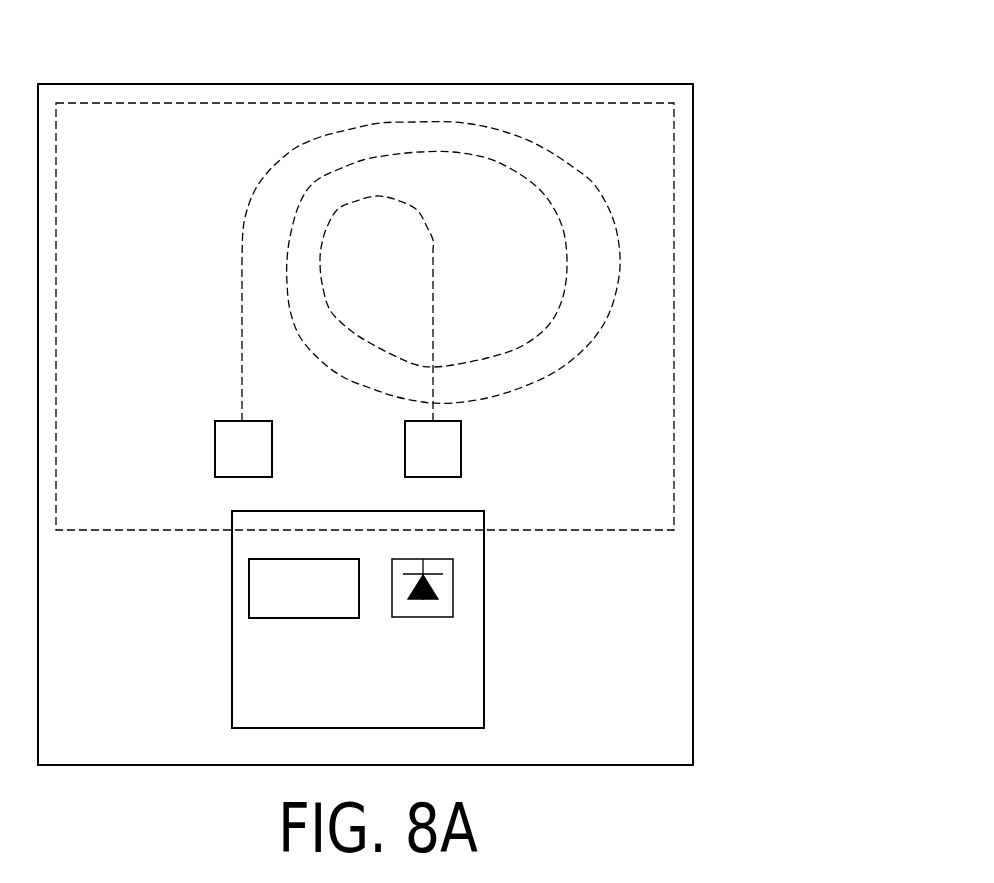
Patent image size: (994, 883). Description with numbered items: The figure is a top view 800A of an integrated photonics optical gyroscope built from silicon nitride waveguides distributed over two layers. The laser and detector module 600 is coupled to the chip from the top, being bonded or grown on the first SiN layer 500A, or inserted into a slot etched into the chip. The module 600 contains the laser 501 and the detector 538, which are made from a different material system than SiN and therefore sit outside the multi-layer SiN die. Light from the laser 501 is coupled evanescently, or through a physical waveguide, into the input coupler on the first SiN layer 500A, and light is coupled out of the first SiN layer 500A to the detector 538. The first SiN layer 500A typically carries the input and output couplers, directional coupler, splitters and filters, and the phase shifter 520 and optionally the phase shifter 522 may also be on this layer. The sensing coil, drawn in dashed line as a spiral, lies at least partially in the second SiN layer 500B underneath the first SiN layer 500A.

The top view 800A is at (724, 55).
The first SiN layer 500A is at (694, 157).
The second SiN layer 500B is at (674, 213).
The phase shifter 520 is at (215, 446).
The phase shifter 522 is at (461, 448).
The laser and detector module 600 is at (406, 619).
The laser 501 is at (310, 618).
The detector 538 is at (423, 617).